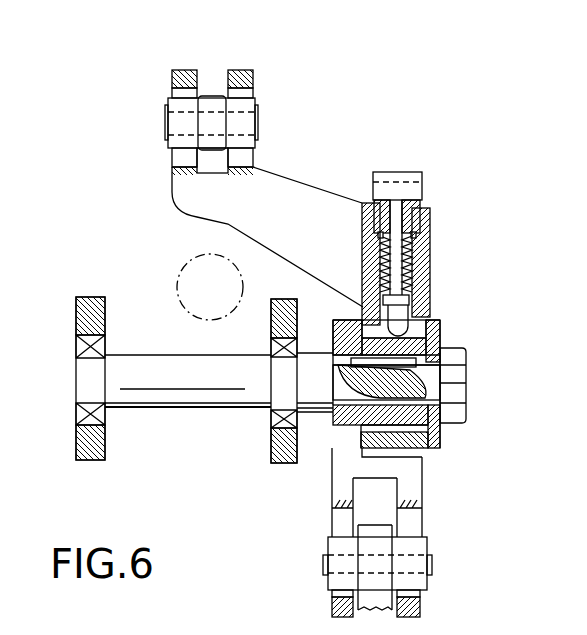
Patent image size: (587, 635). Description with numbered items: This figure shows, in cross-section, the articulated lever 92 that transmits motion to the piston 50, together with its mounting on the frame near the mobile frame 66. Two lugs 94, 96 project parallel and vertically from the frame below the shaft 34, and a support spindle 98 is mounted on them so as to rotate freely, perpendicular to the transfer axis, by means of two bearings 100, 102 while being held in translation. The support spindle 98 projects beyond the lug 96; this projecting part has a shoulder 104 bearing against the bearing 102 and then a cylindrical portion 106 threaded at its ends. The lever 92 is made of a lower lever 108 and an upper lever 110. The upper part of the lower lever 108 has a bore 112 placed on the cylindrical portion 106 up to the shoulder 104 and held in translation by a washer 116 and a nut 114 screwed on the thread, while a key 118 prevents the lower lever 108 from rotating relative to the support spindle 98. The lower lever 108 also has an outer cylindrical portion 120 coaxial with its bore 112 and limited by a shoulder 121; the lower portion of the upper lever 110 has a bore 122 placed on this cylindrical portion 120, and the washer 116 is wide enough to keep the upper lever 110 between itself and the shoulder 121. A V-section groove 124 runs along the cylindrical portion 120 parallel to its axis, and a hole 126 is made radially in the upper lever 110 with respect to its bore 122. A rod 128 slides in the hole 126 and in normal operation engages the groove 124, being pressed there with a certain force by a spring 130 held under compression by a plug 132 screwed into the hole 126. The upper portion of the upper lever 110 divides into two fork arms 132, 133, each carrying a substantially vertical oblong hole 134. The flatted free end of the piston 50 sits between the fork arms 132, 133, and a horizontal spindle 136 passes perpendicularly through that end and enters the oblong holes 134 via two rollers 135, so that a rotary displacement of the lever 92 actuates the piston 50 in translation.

The shaft 34 is at (178, 287).
The piston 50 is at (212, 96).
The mobile frame 66 is at (378, 596).
The lever 92 is at (210, 219).
The lug 94 is at (90, 297).
The lug 96 is at (278, 299).
The support spindle 98 is at (157, 395).
The bearing 100 is at (77, 344).
The bearing 102 is at (271, 408).
The shoulder 104 is at (313, 408).
The cylindrical portion 106 is at (440, 430).
The lower lever 108 is at (330, 502).
The upper lever 110 is at (430, 248).
The bore 112 is at (443, 403).
The nut 114 is at (458, 354).
The washer 116 is at (438, 348).
The key 118 is at (442, 380).
The outer cylindrical portion 120 is at (388, 452).
The shoulder 121 is at (363, 318).
The bore 122 is at (433, 450).
The groove 124 is at (430, 311).
The hole 126 is at (377, 307).
The rod 128 is at (425, 212).
The spring 130 is at (363, 248).
The plug 132 is at (175, 71).
The fork arm 133 is at (236, 70).
The oblong hole 134 is at (172, 92).
The roller 135 is at (172, 141).
The horizontal spindle 136 is at (258, 120).